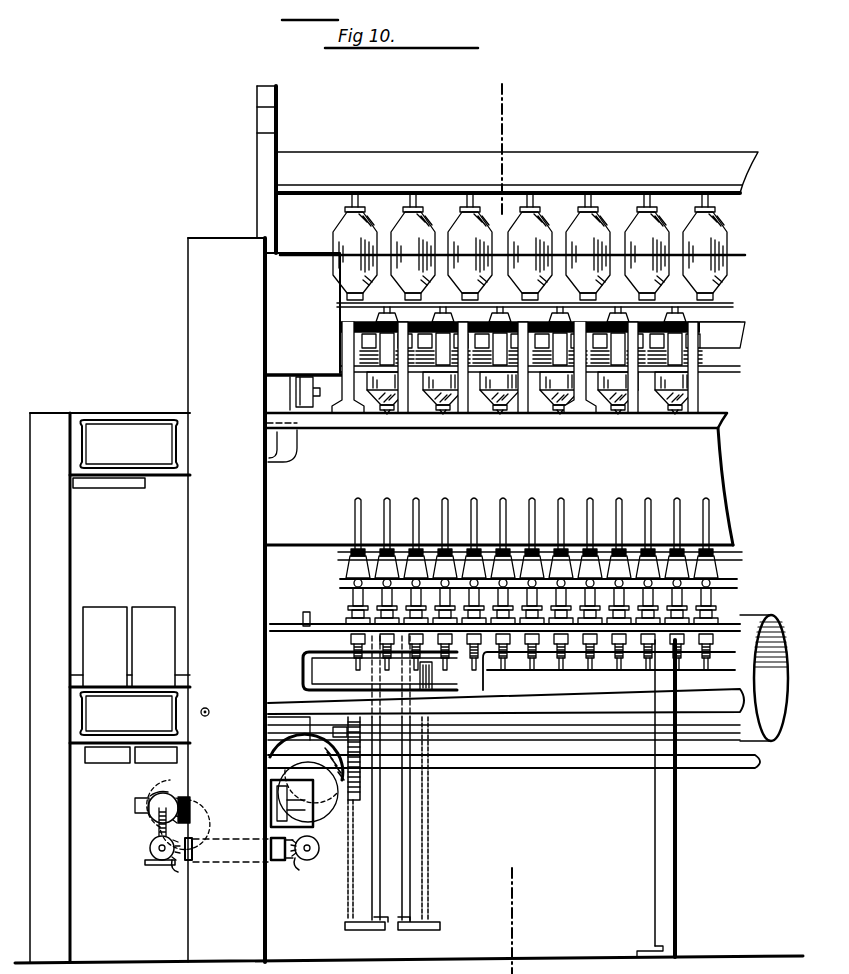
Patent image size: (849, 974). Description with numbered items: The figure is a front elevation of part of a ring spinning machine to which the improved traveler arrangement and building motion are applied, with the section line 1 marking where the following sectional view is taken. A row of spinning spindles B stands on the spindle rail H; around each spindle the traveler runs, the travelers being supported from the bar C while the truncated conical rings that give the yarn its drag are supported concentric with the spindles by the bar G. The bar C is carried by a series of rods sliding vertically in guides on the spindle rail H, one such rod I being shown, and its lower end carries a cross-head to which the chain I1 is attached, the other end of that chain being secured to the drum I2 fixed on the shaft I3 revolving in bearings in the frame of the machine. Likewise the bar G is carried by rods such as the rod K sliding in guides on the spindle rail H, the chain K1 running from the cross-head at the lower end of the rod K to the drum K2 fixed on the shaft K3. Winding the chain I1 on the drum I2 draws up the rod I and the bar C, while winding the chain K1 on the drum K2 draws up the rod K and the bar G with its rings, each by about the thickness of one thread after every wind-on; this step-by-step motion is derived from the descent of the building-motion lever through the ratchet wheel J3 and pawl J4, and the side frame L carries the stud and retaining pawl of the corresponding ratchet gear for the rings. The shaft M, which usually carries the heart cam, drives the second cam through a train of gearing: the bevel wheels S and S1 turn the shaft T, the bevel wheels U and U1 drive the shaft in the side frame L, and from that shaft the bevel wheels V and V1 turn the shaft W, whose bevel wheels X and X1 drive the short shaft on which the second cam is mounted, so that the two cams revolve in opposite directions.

The section line 1— 1 is at (493, 142).
The side frame L is at (226, 600).
The spinning spindle B is at (684, 512).
The bar C is at (748, 556).
The rod I is at (372, 787).
The bar G is at (746, 583).
The spindle rail H is at (758, 695).
The shaft K3 is at (742, 662).
The drum K2 is at (439, 684).
The drum I2 is at (356, 717).
The shaft I3 is at (730, 724).
The shaft M is at (570, 750).
The bevel wheel S is at (310, 748).
The bevel wheel S1 is at (326, 766).
The shaft T is at (297, 803).
The rod K is at (404, 806).
The chain I1 is at (358, 860).
The chain K1 is at (428, 852).
The bevel wheel U is at (319, 846).
The bevel wheel U1 is at (308, 869).
The bevel wheel X is at (148, 812).
The bevel wheel X1 is at (195, 805).
The ratchet wheel J3 is at (185, 782).
The pawl J4 is at (150, 795).
The shaft W is at (153, 825).
The bevel wheel V is at (150, 850).
The bevel wheel V1 is at (183, 874).